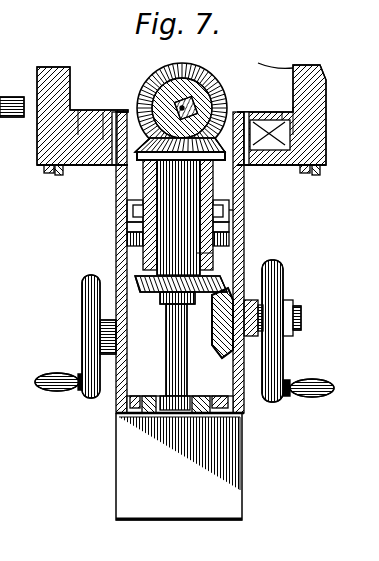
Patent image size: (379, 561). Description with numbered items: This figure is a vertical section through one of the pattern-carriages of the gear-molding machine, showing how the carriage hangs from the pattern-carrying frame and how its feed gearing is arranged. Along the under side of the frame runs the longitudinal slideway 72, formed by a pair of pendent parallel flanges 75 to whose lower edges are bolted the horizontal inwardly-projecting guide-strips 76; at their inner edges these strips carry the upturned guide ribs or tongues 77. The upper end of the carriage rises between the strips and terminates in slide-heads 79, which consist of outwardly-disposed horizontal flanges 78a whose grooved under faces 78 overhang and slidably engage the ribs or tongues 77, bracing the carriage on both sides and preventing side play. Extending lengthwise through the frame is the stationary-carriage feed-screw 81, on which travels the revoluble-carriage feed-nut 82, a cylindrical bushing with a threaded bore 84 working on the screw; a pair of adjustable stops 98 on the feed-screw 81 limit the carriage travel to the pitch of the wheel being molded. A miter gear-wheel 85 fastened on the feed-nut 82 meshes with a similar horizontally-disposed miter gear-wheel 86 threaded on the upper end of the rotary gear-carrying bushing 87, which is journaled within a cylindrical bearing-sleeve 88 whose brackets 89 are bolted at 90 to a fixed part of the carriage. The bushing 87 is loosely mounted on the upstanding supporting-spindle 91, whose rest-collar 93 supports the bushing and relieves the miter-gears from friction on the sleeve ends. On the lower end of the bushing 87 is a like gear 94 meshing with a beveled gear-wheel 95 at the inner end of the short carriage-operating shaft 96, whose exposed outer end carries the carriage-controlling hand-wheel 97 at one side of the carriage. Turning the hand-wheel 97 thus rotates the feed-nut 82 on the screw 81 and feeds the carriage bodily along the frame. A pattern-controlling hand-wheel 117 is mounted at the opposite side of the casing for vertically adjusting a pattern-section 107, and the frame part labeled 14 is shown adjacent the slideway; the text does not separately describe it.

The frame 14 is at (243, 217).
The longitudinal slideway 72 is at (63, 117).
The pendent parallel flanges 75 is at (38, 72).
The guide-strips 76 is at (97, 153).
The guide ribs or tongues 77 is at (78, 168).
The grooved under faces 78 is at (105, 112).
The outwardly-disposed horizontal flanges 78a is at (85, 110).
The slide-heads 79 is at (255, 120).
The stationary-carriage feed-screw 81 is at (170, 100).
The revoluble-carriage feed-nut 82 is at (210, 82).
The threaded bore 84 is at (183, 103).
The miter gear-wheel 85 is at (224, 100).
The miter gear-wheel 86 is at (212, 160).
The rotary gear-carrying bushing 87 is at (165, 182).
The cylindrical bearing-sleeve 88 is at (197, 253).
The brackets 89 is at (133, 228).
The bolts 90 is at (135, 220).
The upstanding supporting-spindle 91 is at (178, 350).
The rest-collar 93 is at (161, 304).
The gear 94 is at (143, 292).
The beveled gear-wheel 95 is at (220, 350).
The carriage-operating shaft 96 is at (304, 312).
The carriage-controlling hand-wheel 97 is at (268, 398).
The adjustable stops 98 is at (9, 442).
The pattern-section 107 is at (243, 477).
The pattern-controlling hand-wheel 117 is at (87, 298).